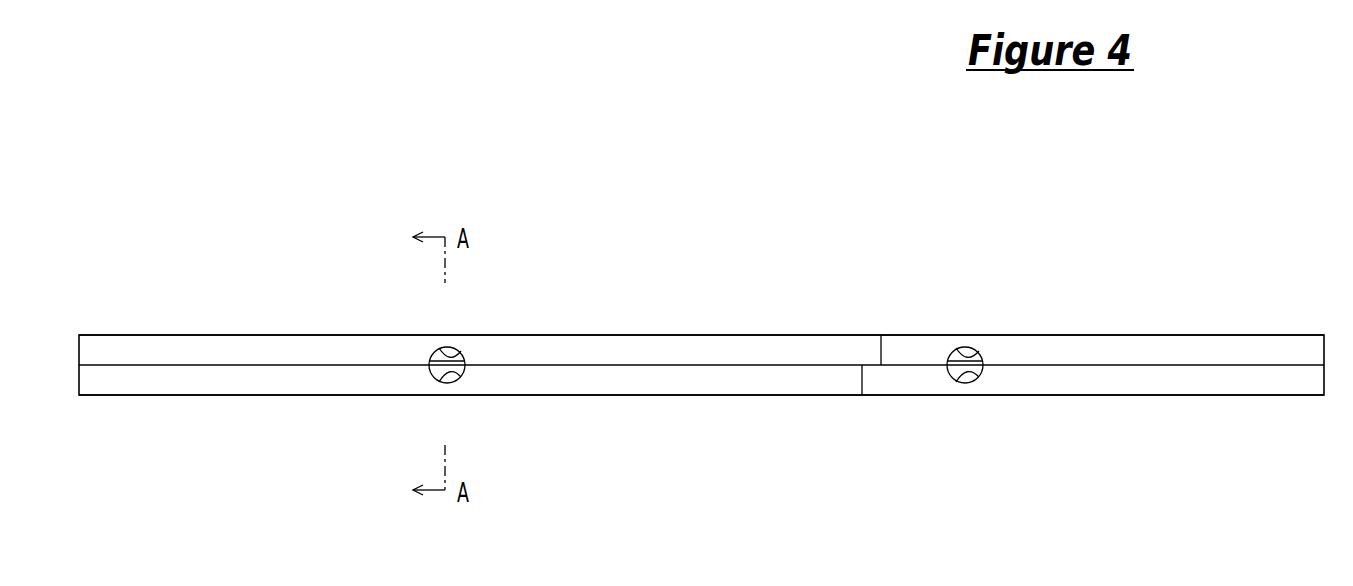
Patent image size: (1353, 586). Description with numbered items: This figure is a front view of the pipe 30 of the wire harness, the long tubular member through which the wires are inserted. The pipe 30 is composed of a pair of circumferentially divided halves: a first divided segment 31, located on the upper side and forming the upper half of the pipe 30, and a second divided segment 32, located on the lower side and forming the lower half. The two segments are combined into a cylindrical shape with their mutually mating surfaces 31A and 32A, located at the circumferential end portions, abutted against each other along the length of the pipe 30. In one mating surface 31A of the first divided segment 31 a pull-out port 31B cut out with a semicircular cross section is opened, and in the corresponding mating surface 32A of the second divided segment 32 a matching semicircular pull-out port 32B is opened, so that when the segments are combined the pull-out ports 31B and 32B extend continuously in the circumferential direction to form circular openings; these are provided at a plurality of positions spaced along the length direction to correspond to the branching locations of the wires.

The pipe 30 is at (673, 336).
The first divided segment 31 is at (810, 343).
The second divided segment 32 is at (800, 382).
The mating surface 31A is at (862, 395).
The mating surface 32A is at (881, 335).
The pull-out port 31B is at (461, 351).
The pull-out port 32B is at (461, 377).